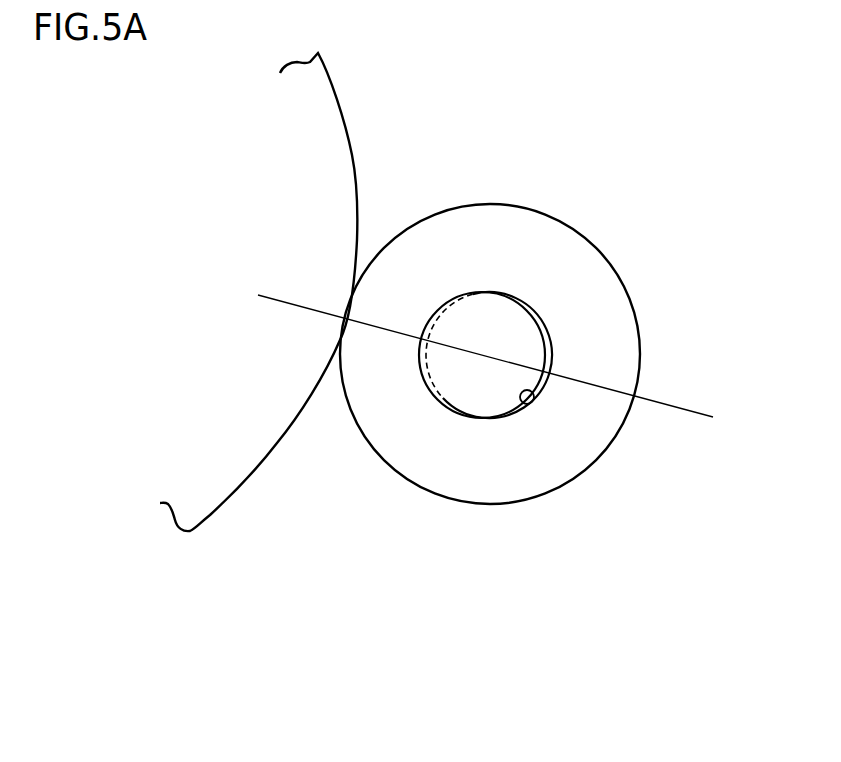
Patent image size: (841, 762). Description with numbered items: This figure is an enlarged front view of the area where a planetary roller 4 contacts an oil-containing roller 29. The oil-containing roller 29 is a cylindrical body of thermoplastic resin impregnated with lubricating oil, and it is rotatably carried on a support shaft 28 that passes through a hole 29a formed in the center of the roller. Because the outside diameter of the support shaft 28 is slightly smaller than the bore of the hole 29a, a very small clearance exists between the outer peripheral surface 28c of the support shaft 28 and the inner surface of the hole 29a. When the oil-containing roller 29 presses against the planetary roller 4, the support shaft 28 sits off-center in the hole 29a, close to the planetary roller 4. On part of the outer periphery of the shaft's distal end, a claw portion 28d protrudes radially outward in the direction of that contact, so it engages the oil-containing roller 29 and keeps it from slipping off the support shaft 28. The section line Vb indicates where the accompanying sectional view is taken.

The planetary roller 4 is at (348, 133).
The support shaft 28 is at (496, 323).
The outer peripheral surface 28c is at (543, 325).
The claw portion 28d is at (420, 377).
The oil-containing roller 29 is at (437, 498).
The hole 29a is at (522, 402).
The line Vb- Vb is at (266, 293).